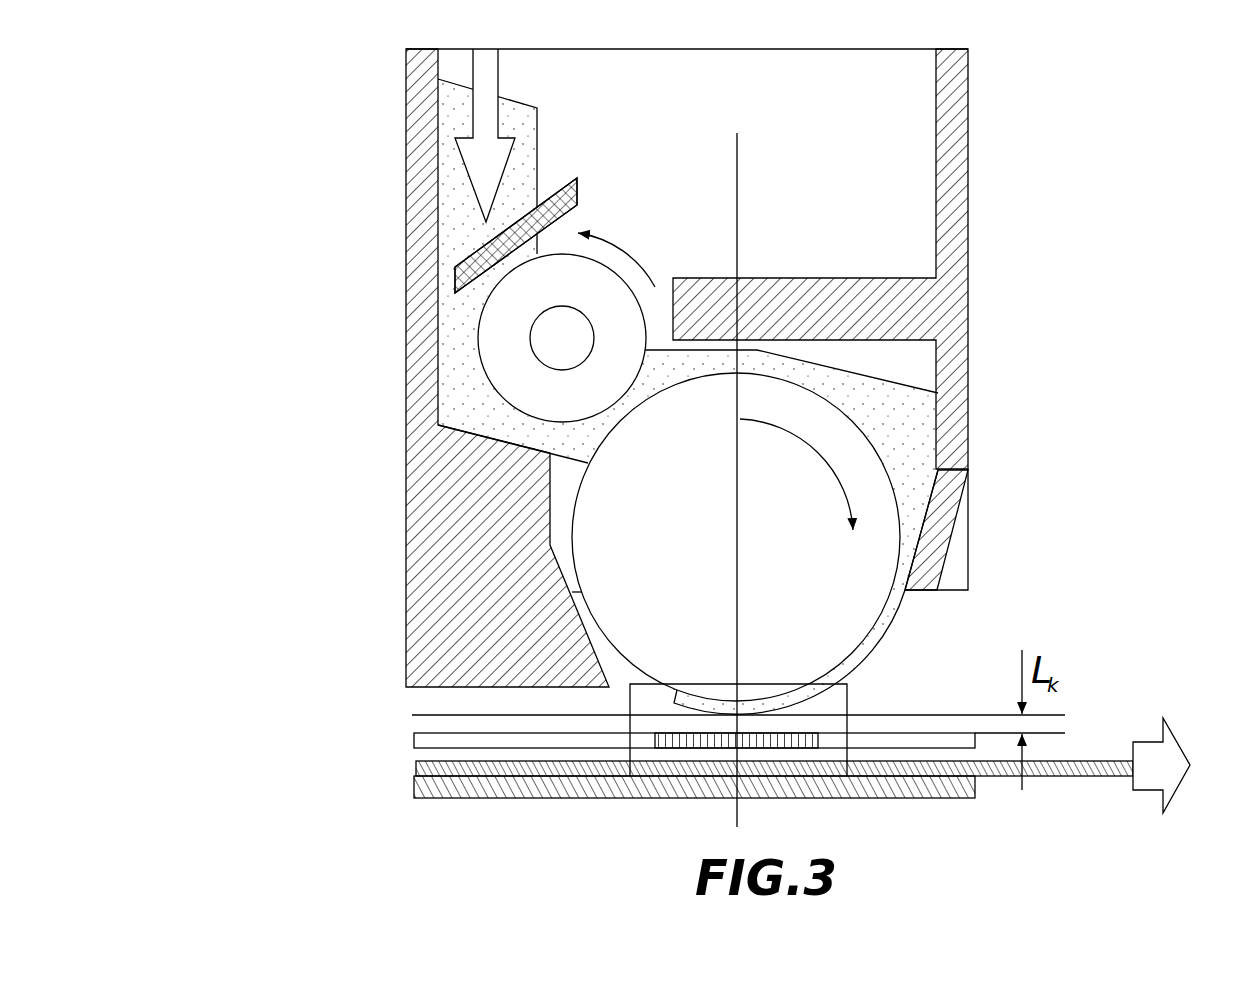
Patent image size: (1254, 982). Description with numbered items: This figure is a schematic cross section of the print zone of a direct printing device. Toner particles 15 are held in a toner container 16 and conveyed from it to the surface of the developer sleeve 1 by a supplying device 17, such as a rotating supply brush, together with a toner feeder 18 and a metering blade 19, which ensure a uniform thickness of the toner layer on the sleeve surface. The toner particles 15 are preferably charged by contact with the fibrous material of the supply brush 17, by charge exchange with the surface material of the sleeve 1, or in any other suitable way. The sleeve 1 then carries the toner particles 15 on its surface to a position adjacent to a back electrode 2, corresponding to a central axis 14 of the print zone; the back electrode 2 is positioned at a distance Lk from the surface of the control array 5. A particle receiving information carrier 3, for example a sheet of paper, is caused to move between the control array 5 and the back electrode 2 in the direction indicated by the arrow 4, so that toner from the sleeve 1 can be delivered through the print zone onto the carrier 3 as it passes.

The developer sleeve 1 is at (830, 440).
The back electrode 2 is at (444, 790).
The particle receiving information carrier 3 is at (1092, 760).
The arrow 4 is at (1173, 781).
The control array 5 is at (457, 733).
The central axis 14 is at (735, 147).
The toner particles 15 is at (455, 118).
The toner container 16 is at (848, 160).
The supplying device 17 is at (517, 357).
The toner feeder 18 is at (455, 263).
The metering blade 19 is at (932, 540).